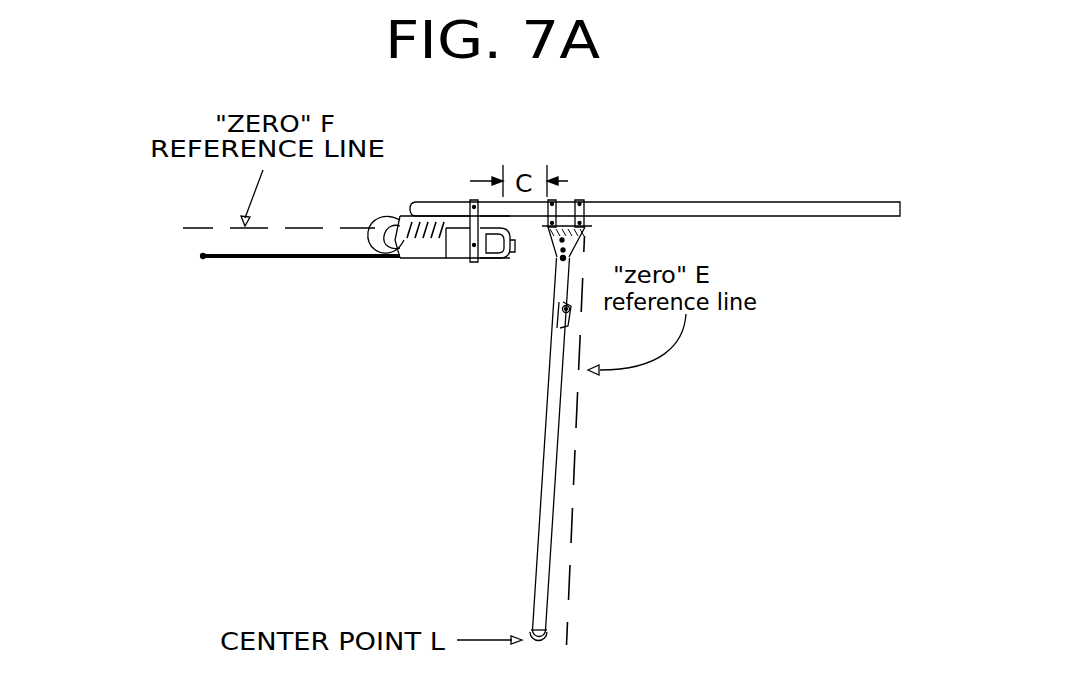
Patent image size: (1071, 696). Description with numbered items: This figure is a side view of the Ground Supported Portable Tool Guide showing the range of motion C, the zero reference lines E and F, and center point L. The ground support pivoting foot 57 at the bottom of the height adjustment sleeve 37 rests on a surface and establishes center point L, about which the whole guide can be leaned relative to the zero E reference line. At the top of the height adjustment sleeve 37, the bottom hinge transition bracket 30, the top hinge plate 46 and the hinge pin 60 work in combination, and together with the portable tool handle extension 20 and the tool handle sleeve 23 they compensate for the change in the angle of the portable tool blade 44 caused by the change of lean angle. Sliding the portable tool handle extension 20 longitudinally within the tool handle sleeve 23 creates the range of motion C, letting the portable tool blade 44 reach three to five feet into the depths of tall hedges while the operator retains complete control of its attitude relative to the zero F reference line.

The portable tool handle extension 20 is at (787, 202).
The tool handle sleeve 23 is at (570, 203).
The hinge pin 60 is at (585, 226).
The bottom hinge transition bracket 30 is at (562, 258).
The height adjustment sleeve 37 is at (544, 445).
The ground support pivoting foot 57 is at (548, 632).
The top hinge plate 46 is at (560, 229).
The portable tool blade 44 is at (262, 268).